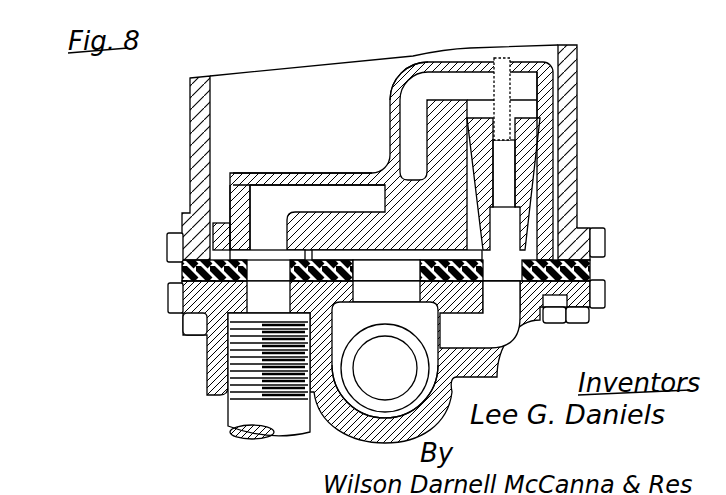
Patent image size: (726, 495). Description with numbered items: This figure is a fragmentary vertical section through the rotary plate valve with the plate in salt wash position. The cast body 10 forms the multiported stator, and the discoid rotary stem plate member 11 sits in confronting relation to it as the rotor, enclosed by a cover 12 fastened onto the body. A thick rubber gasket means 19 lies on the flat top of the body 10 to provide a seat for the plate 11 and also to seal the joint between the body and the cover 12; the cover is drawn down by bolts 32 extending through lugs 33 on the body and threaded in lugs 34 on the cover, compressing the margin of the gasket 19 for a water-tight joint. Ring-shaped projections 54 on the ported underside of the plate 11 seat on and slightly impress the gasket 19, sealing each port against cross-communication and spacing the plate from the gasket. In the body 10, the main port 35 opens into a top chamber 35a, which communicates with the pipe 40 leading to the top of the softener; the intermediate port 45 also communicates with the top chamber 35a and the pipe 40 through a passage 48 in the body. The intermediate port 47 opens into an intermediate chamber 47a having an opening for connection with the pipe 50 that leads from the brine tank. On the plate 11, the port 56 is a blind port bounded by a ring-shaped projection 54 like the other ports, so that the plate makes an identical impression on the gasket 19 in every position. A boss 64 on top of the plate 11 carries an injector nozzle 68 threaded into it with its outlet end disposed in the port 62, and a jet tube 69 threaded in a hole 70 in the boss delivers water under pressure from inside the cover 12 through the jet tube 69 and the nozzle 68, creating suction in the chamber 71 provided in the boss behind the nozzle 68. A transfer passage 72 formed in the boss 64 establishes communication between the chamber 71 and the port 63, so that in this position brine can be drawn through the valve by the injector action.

The cast body 10 is at (215, 377).
The rotary stem plate member 11 is at (250, 173).
The cover 12 is at (190, 137).
The gasket means 19 is at (182, 272).
The bolts 32 is at (188, 328).
The lugs 33 is at (168, 297).
The lugs 34 is at (167, 247).
The main port 35 is at (362, 295).
The top chamber 35a is at (385, 420).
The pipe 40 is at (362, 405).
The intermediate port 45 is at (501, 297).
The intermediate port 47 is at (268, 297).
The intermediate chamber 47a is at (226, 340).
The passage 48 is at (480, 314).
The pipe 50 is at (238, 412).
The ring-shaped projections 54 is at (226, 257).
The blind port 56 is at (377, 263).
The port 62 is at (530, 242).
The port 63 is at (256, 232).
The boss 64 is at (390, 128).
The injector nozzle 68 is at (527, 193).
The jet tube 69 is at (513, 117).
The hole 70 is at (520, 68).
The chamber 71 is at (528, 92).
The transfer passage 72 is at (328, 190).